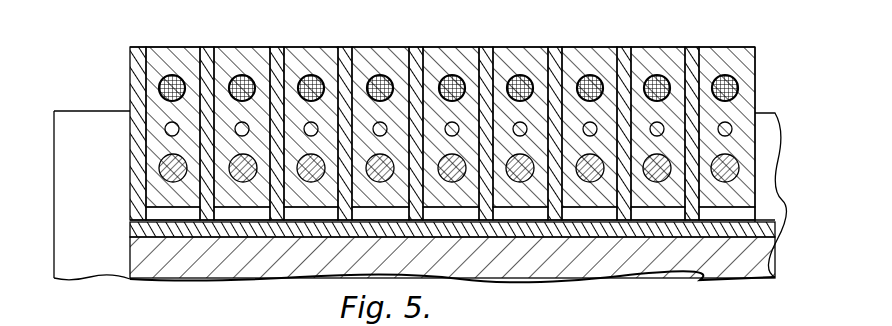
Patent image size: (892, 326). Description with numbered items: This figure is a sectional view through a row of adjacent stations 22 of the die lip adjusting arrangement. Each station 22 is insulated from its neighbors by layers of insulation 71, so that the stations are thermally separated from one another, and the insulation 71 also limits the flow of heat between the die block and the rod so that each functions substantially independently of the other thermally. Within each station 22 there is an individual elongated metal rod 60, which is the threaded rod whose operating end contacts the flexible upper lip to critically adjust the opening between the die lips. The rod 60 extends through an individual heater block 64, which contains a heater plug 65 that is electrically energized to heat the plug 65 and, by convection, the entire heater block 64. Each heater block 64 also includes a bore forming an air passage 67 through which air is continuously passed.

The station 22 is at (318, 42).
The elongated metal rod 60 is at (183, 181).
The heater block 64 is at (445, 208).
The heater plug 65 is at (580, 78).
The air passage 67 is at (236, 127).
The layer of insulation 71 is at (140, 47).